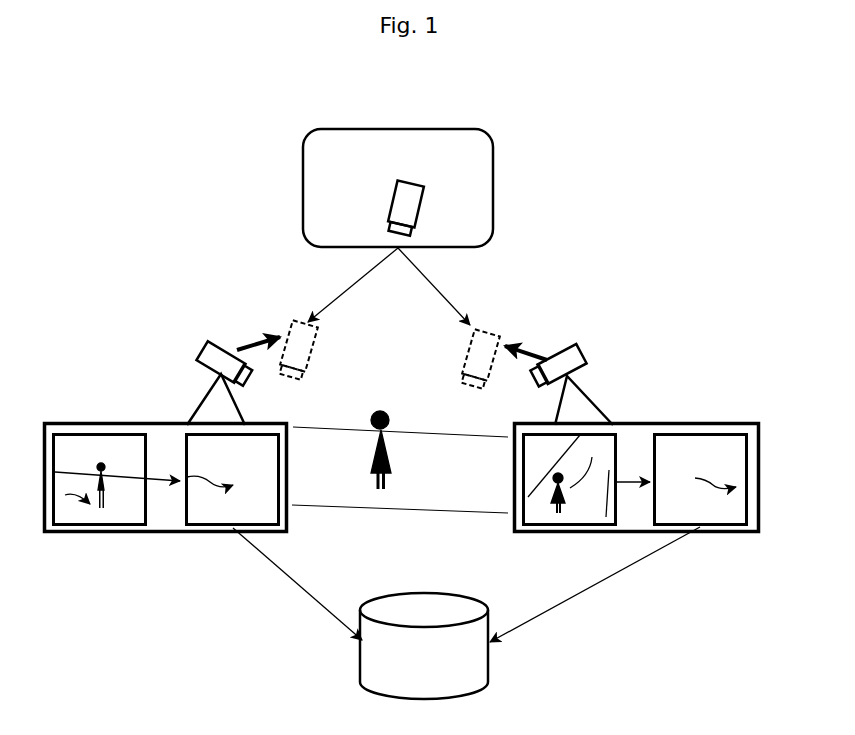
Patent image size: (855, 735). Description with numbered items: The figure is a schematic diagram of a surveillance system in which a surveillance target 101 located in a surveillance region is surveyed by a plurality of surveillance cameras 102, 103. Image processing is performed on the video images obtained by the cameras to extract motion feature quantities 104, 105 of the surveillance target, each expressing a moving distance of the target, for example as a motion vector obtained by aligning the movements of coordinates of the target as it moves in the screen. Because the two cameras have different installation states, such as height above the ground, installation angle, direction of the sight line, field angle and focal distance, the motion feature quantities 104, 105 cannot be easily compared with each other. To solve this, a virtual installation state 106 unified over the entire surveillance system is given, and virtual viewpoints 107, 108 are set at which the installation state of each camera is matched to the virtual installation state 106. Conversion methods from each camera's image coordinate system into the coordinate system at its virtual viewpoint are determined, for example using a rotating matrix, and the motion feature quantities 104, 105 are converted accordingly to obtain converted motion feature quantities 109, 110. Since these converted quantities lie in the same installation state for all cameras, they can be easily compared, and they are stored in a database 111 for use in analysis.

The surveillance target 101 is at (400, 423).
The surveillance camera 102 is at (215, 357).
The surveillance camera 103 is at (585, 363).
The motion feature quantity 104 is at (93, 509).
The motion feature quantity 105 is at (570, 509).
The virtual installation state 106 is at (398, 165).
The virtual viewpoint 107 is at (279, 323).
The virtual viewpoint 108 is at (509, 331).
The converted motion feature quantity 109 is at (230, 510).
The converted motion feature quantity 110 is at (701, 510).
The database 111 is at (424, 622).